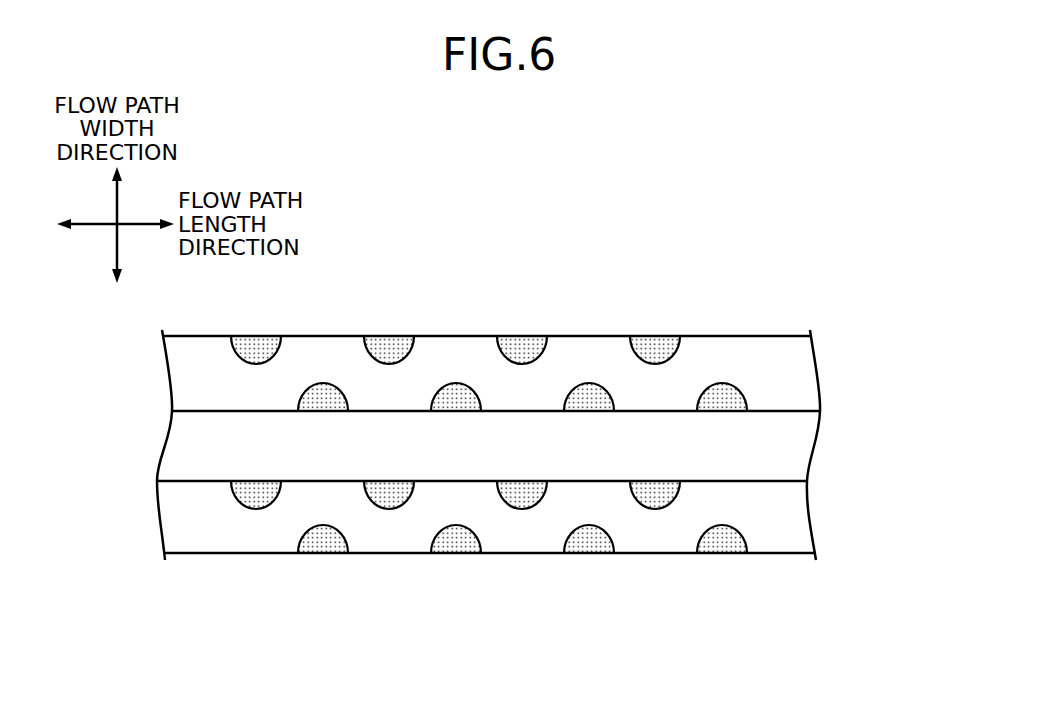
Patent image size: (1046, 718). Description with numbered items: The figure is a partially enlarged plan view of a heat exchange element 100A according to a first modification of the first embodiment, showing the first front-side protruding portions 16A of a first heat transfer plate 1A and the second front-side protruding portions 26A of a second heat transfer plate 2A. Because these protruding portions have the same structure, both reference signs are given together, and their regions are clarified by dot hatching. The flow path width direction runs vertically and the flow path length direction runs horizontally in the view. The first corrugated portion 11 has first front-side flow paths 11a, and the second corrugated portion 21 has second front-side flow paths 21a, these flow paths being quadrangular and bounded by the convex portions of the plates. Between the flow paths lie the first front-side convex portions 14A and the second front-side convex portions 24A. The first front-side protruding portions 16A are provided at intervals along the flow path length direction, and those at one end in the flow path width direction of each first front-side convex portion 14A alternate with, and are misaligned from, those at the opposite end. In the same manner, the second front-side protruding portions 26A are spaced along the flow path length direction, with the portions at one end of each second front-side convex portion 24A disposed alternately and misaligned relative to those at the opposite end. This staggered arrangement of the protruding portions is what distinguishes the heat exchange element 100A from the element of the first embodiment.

The heat exchange element 100A is at (718, 190).
The first heat transfer plate 1A is at (551, 451).
The second heat transfer plate 2A is at (787, 374).
The first front-side convex portion 14A is at (551, 446).
The second front-side convex portion 24A is at (787, 443).
The first corrugated portion 11 is at (489, 451).
The second corrugated portion 21 is at (489, 451).
The first front-side flow path 11a is at (489, 451).
The second front-side flow path 21a is at (582, 336).
The first front-side protruding portion 16A is at (515, 447).
The second front-side protruding portion 26A is at (718, 392).